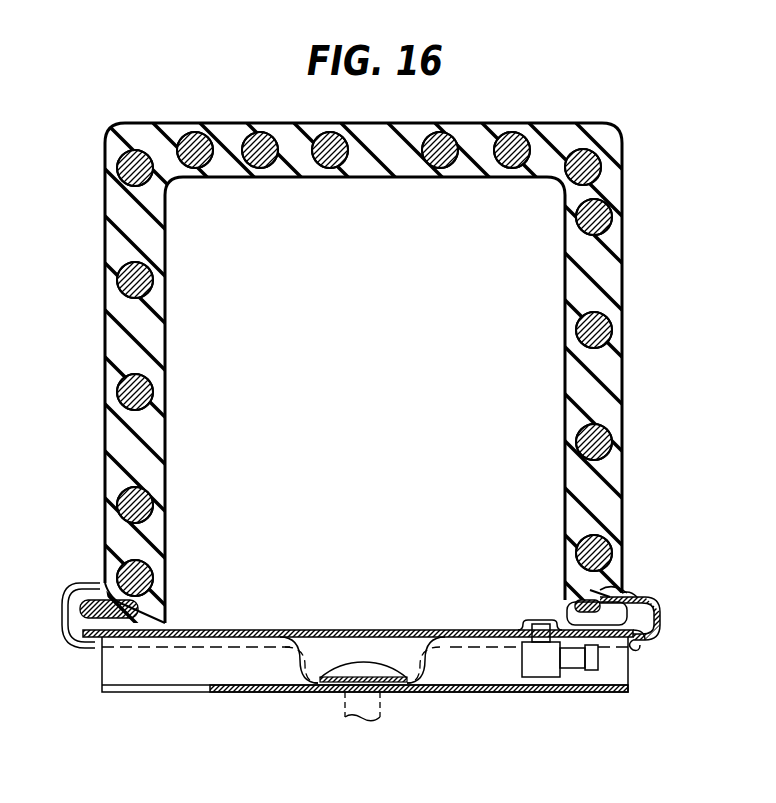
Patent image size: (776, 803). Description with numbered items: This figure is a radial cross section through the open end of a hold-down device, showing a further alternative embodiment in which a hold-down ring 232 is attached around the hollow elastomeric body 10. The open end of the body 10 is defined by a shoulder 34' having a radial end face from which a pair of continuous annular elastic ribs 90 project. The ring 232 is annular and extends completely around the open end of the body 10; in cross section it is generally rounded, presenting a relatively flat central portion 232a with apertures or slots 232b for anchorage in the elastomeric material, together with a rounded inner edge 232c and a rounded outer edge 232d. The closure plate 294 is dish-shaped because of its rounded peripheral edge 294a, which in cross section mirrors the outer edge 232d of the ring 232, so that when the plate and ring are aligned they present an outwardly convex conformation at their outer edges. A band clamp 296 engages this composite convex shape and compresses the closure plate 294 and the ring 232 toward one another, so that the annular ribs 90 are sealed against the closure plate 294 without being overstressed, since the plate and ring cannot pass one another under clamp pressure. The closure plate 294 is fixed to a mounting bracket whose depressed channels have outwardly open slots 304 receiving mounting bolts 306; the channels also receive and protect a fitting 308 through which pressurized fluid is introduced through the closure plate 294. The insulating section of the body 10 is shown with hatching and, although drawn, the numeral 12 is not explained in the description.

The hollow elastomeric body 10 is at (480, 96).
The insulation 12 is at (540, 123).
The shoulder 34' is at (633, 567).
The annular ribs 90 is at (132, 632).
The hold-down ring 232 is at (657, 596).
The central portion 232a is at (600, 595).
The apertures or slots 232b is at (637, 587).
The inner edge 232c is at (597, 605).
The outer edge 232d is at (658, 610).
The closure plate 294 is at (382, 630).
The rounded peripheral edge 294a is at (643, 640).
The band clamp 296 is at (655, 635).
The outwardly open slots 304 is at (583, 688).
The mounting bolts 306 is at (385, 712).
The fitting 308 is at (535, 668).